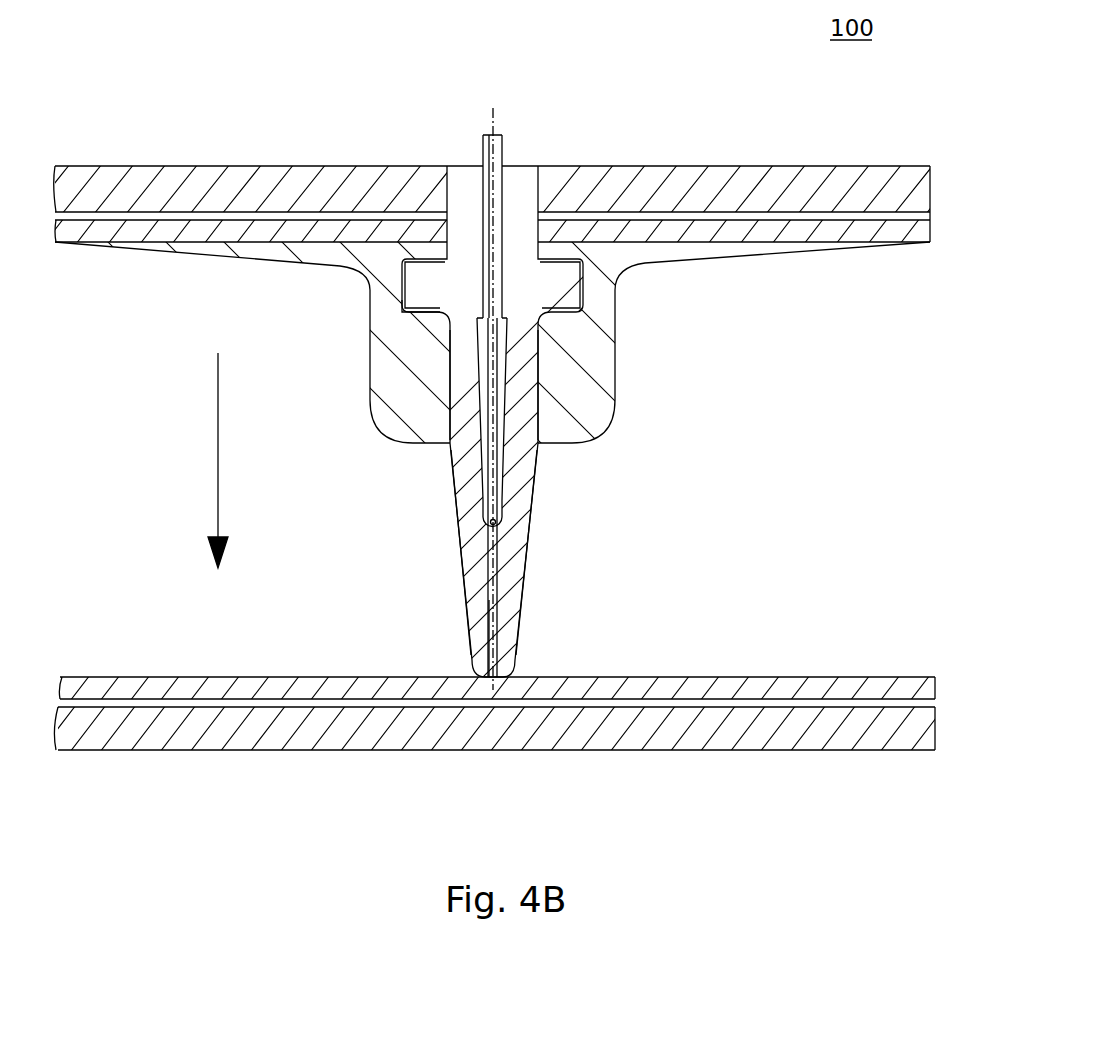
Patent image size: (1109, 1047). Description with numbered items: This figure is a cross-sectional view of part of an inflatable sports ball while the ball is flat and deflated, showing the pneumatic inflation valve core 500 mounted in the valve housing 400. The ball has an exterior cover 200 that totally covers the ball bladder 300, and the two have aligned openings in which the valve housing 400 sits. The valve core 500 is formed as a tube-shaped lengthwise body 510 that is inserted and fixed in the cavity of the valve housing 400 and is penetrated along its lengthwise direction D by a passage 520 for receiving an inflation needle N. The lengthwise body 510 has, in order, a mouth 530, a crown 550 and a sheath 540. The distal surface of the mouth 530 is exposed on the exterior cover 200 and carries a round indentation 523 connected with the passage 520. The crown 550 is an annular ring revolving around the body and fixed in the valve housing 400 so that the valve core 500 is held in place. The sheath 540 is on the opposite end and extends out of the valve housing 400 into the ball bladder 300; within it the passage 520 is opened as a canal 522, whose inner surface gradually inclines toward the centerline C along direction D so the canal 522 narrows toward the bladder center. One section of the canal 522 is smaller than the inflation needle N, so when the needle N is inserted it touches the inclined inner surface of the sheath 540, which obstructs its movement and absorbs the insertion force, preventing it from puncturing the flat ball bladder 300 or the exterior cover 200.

The exterior cover 200 is at (735, 180).
The ball bladder 300 is at (855, 232).
The valve housing 400 is at (585, 410).
The pneumatic inflation valve core 500 is at (530, 148).
The lengthwise body 510 is at (520, 367).
The passage 520 is at (478, 408).
The canal 522 is at (485, 573).
The indentation 523 is at (477, 163).
The mouth 530 is at (450, 248).
The sheath 540 is at (520, 510).
The crown 550 is at (558, 287).
The inflation needle N is at (405, 283).
The centerline C is at (490, 610).
The lengthwise direction D is at (206, 460).